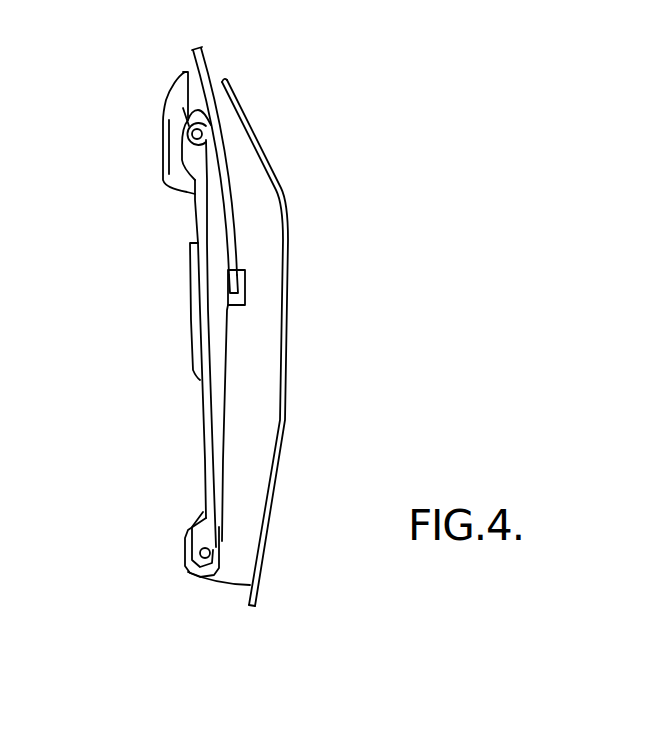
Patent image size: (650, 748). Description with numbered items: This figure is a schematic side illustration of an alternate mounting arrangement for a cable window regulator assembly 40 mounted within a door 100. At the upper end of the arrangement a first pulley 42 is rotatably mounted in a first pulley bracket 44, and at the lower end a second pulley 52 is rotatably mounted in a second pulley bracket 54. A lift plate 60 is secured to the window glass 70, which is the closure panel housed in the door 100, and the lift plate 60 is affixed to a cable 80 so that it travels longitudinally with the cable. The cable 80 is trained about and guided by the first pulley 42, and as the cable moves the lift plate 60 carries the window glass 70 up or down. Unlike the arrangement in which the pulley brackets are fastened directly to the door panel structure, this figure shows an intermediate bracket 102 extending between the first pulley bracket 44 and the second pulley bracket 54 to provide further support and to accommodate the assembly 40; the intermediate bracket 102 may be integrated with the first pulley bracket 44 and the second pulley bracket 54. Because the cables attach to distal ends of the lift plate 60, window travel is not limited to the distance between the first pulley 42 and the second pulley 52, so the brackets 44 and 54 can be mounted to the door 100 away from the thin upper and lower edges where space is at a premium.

The cable window regulator assembly 40 is at (153, 451).
The first pulley 42 is at (177, 128).
The first pulley bracket 44 is at (175, 165).
The second pulley 52 is at (203, 567).
The second pulley bracket 54 is at (210, 530).
The lift plate 60 is at (223, 297).
The window glass 70 is at (205, 63).
The cable 80 is at (227, 388).
The door 100 is at (287, 200).
The intermediate bracket 102 is at (200, 272).